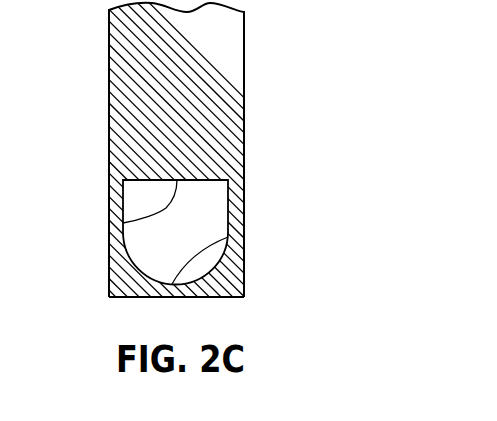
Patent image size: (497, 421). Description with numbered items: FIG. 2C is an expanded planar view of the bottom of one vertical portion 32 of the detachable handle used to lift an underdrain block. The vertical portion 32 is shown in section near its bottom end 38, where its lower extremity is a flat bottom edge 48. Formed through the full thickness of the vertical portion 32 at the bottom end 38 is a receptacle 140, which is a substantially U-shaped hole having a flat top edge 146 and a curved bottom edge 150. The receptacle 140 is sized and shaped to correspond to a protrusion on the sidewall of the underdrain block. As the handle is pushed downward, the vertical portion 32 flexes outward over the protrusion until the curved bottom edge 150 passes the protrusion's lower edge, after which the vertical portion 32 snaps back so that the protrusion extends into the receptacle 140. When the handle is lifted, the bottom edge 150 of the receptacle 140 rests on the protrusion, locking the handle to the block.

The vertical portion 32 is at (90, 96).
The bottom end 38 is at (222, 161).
The receptacle 140 is at (163, 247).
The flat top edge 146 is at (123, 223).
The curved bottom edge 150 is at (228, 237).
The bottom edge 48 is at (185, 297).